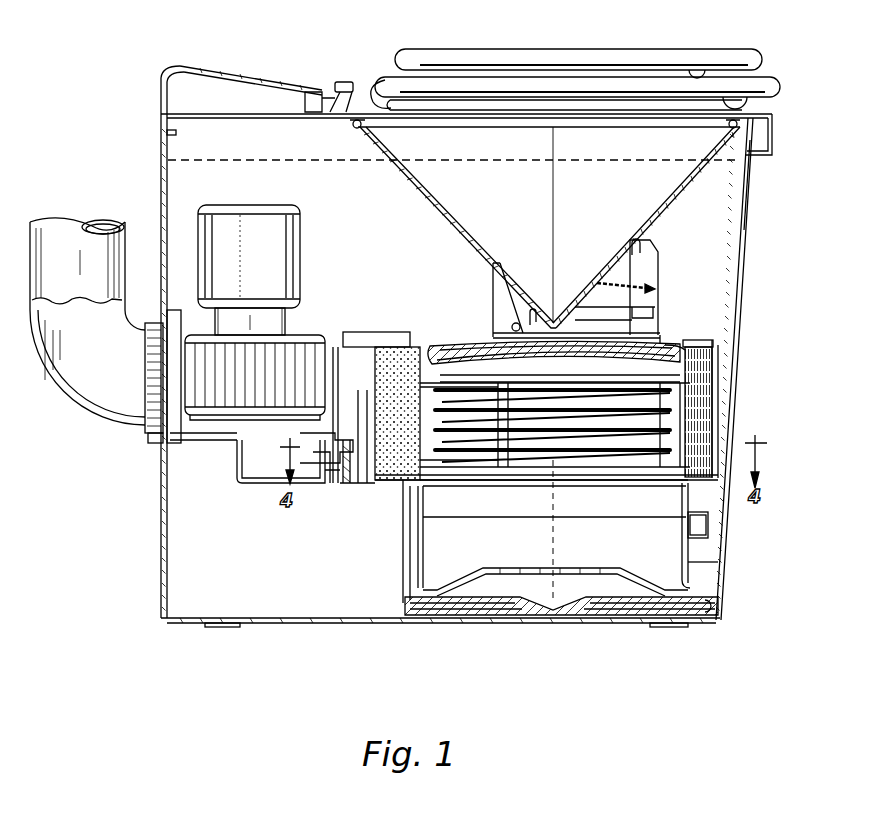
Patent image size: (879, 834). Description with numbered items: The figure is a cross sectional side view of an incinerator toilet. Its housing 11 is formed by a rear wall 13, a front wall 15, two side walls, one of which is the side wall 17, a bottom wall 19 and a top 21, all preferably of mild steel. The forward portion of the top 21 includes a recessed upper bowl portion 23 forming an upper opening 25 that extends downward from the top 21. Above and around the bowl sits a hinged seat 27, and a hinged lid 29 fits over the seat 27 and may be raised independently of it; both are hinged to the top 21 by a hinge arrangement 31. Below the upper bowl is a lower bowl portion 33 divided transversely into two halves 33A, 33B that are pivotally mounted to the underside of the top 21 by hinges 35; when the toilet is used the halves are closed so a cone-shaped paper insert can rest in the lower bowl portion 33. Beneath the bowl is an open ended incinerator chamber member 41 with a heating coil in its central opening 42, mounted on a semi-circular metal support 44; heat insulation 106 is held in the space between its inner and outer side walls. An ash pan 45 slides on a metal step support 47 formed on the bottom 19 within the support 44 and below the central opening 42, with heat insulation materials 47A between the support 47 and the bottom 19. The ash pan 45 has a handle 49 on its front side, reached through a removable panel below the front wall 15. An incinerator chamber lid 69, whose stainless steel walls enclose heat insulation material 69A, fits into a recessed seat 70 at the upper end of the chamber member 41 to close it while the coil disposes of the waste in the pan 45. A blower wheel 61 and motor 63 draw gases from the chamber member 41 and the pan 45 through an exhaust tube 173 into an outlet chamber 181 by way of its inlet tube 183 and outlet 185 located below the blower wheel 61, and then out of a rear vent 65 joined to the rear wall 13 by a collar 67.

The housing 11 is at (120, 52).
The rear wall 13 is at (163, 190).
The front wall 15 is at (741, 250).
The side wall 17 is at (742, 202).
The bottom wall 19 is at (353, 622).
The top 21 is at (237, 79).
The upper bowl portion 23 is at (410, 118).
The upper opening 25 is at (453, 120).
The hinged seat 27 is at (772, 75).
The hinged lid 29 is at (588, 50).
The hinge arrangement 31 is at (343, 80).
The lower bowl portion 33 is at (546, 227).
The lower bowl half 33A is at (476, 252).
The lower bowl half 33B is at (679, 196).
The hinges 35 is at (355, 126).
The incinerator chamber member 41 is at (707, 373).
The central opening 42 is at (590, 472).
The semi-circular metal support 44 is at (403, 560).
The ash pan 45 is at (719, 588).
The metal step support 47 is at (709, 612).
The heat insulation materials 47A is at (500, 609).
The handle 49 is at (708, 526).
The blower wheel 61 is at (200, 387).
The motor 63 is at (303, 225).
The rear vent 65 is at (87, 407).
The collar 67 is at (153, 440).
The incinerator chamber lid 69 is at (444, 347).
The heat insulation material 69A is at (472, 343).
The recessed seat 70 is at (691, 340).
The heat insulation 106 is at (707, 403).
The exhaust tube 173 is at (347, 466).
The outlet chamber 181 is at (261, 484).
The inlet tube 183 is at (327, 471).
The outlet 185 is at (238, 447).